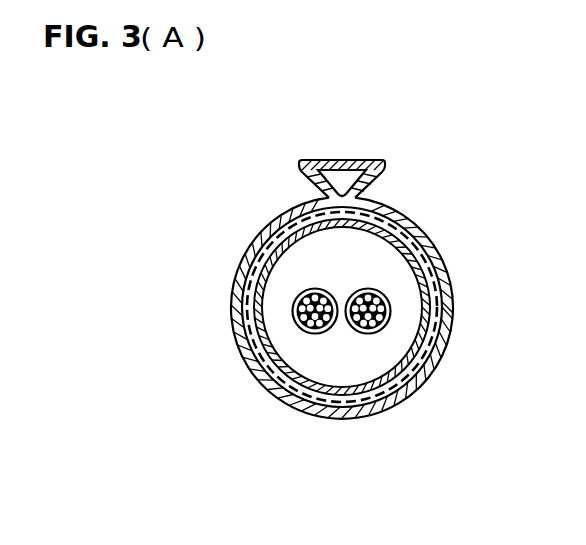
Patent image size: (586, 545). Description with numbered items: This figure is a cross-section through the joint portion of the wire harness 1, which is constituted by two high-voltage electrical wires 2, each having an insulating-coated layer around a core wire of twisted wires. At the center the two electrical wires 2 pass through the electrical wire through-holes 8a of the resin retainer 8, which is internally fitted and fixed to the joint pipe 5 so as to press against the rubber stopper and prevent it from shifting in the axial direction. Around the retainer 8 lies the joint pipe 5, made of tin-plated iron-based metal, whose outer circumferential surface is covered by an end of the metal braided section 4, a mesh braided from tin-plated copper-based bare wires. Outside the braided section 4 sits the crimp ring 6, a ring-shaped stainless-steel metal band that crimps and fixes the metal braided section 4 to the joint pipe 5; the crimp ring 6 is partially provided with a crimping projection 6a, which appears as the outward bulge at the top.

The wire harness 1 is at (387, 473).
The high-voltage electrical wire 2 is at (316, 334).
The metal braided section 4 is at (428, 347).
The joint pipe 5 is at (410, 373).
The crimp ring 6 is at (408, 220).
The crimping projection 6a is at (340, 158).
The resin retainer 8 is at (305, 258).
The electrical wire through-hole 8a is at (292, 311).